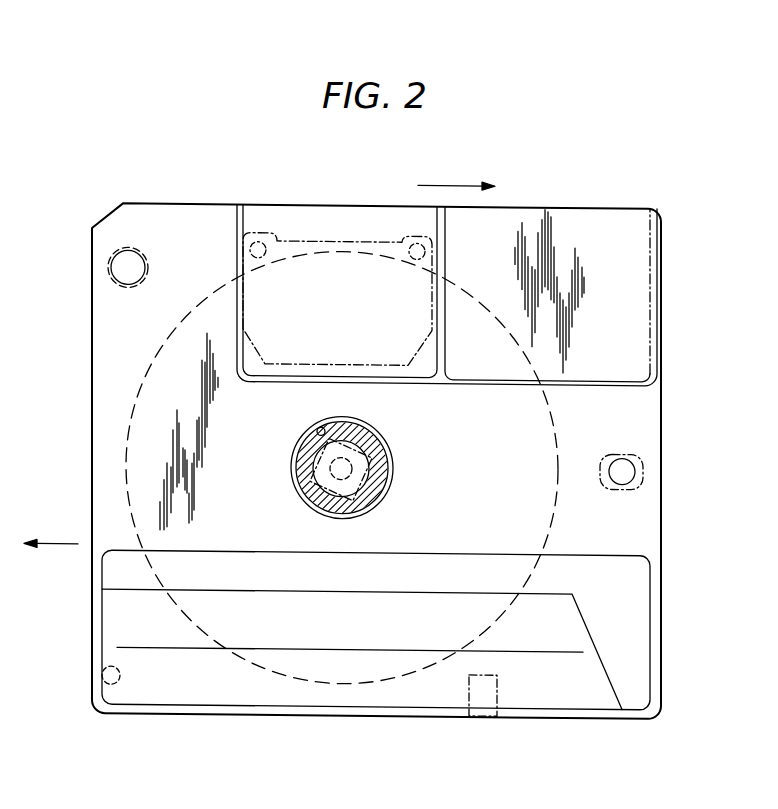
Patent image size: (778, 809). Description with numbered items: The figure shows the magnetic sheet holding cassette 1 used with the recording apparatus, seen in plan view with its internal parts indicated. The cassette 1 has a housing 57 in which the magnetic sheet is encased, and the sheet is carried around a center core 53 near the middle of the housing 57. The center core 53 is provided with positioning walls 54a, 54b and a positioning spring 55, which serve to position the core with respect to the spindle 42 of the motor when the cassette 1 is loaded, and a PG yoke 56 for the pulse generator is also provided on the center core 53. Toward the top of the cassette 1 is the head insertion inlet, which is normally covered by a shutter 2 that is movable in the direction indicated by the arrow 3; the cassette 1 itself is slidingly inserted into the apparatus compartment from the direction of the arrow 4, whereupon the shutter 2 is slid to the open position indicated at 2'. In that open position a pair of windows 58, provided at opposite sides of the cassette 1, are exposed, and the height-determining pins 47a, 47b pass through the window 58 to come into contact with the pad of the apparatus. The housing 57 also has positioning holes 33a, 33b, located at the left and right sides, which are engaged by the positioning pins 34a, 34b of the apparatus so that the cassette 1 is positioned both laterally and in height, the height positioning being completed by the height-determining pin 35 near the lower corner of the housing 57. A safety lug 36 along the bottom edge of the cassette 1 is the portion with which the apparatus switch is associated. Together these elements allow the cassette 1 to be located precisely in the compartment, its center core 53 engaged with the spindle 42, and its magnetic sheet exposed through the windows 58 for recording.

The cassette 1 is at (645, 421).
The shutter 2 is at (337, 264).
The shutter open position 2' is at (573, 295).
The arrow 3 is at (457, 185).
The arrow 4 is at (57, 551).
The positioning hole 33a is at (645, 459).
The positioning hole 33b is at (110, 254).
The positioning pin 34a is at (630, 476).
The positioning pin 34b is at (124, 277).
The height-determining pin 35 is at (118, 684).
The safety lug 36 is at (482, 698).
The spindle 42 is at (300, 471).
The height-determining pin 47a is at (415, 244).
The height-determining pin 47b is at (258, 244).
The center core 53 is at (318, 504).
The positioning wall 54a is at (327, 504).
The positioning wall 54b is at (373, 475).
The positioning spring 55 is at (306, 447).
The PG yoke 56 is at (317, 431).
The housing 57 is at (648, 537).
The window 58 is at (243, 264).